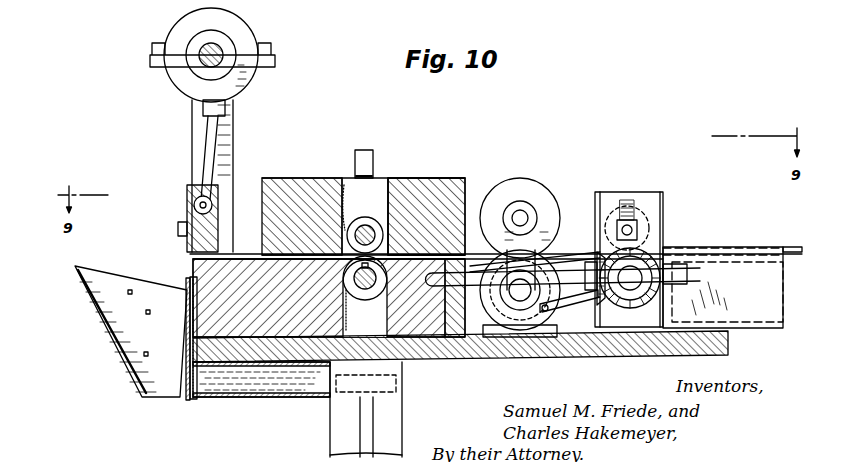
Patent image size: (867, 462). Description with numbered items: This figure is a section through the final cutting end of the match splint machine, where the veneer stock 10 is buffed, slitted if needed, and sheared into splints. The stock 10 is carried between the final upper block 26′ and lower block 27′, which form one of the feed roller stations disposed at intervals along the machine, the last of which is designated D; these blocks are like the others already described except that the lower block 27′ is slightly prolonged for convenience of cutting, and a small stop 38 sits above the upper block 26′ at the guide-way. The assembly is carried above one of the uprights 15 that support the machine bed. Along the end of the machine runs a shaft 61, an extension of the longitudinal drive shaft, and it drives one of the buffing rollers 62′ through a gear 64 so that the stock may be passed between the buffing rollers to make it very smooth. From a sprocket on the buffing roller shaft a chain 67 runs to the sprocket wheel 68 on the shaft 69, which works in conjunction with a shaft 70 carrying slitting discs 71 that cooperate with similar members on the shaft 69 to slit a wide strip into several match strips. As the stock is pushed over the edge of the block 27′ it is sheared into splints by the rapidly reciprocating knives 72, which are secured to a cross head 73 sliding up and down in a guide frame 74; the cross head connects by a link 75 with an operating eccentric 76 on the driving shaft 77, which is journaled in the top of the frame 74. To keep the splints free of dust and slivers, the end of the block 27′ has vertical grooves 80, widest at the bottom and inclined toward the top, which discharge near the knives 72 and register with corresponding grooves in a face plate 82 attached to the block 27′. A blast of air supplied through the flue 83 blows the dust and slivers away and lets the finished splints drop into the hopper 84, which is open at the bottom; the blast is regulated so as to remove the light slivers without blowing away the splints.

The veneer stock 10 is at (290, 250).
The upright 15 is at (340, 422).
The upper block 26′ is at (425, 200).
The lower block 27′ is at (250, 325).
The stop 38 is at (365, 149).
The feed roller station D is at (401, 158).
The shaft 61 is at (690, 262).
The buffing roller 62′ is at (645, 210).
The gear 64 is at (650, 265).
The chain 67 is at (566, 250).
The sprocket wheel 68 is at (560, 305).
The shaft 69 is at (522, 296).
The shaft 70 is at (522, 212).
The slitting disc 71 is at (494, 185).
The reciprocating knife 72 is at (185, 250).
The cross head 73 is at (222, 216).
The guide frame 74 is at (192, 129).
The link 75 is at (215, 140).
The eccentric 76 is at (232, 40).
The driving shaft 77 is at (215, 48).
The vertical groove 80 is at (197, 400).
The face plate 82 is at (187, 280).
The flue 83 is at (290, 385).
The hopper 84 is at (112, 347).